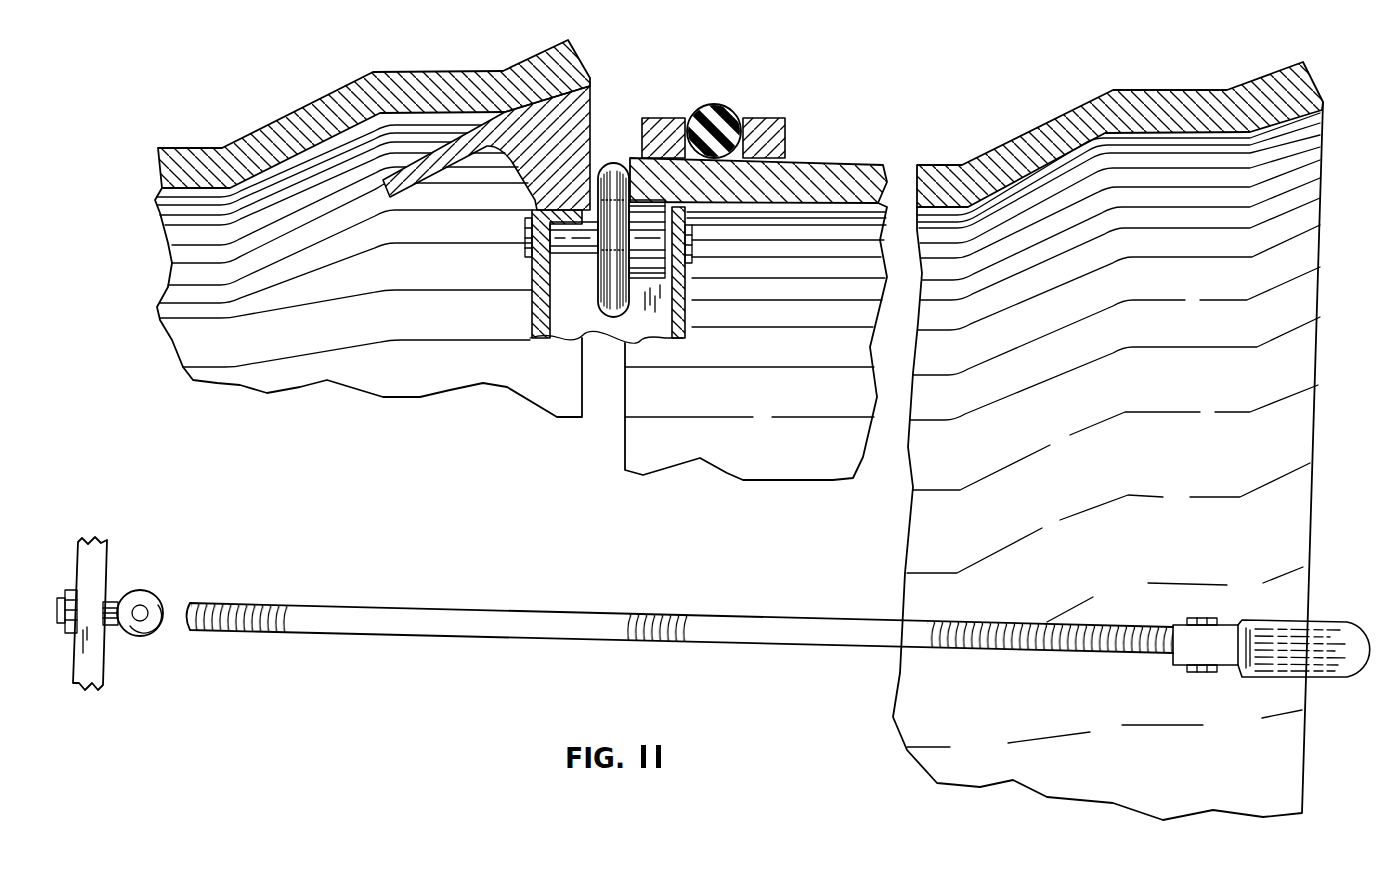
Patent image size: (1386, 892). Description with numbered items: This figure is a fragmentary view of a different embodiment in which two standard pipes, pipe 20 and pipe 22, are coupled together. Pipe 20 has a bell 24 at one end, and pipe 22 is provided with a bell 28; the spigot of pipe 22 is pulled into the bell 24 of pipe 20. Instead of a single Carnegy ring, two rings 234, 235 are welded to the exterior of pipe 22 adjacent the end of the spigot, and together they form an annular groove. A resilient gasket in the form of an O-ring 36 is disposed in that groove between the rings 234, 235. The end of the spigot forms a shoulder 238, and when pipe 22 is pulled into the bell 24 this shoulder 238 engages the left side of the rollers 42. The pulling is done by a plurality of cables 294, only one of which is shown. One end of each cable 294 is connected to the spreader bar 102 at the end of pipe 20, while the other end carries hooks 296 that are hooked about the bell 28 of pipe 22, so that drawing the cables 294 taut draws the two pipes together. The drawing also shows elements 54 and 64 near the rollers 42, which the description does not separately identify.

The pipe 20 is at (199, 146).
The pipe 22 is at (934, 156).
The bell 24 is at (409, 71).
The bell 28 is at (1147, 90).
The gasket 36 is at (718, 107).
The rollers 42 is at (607, 318).
The roller bracket 54 is at (532, 305).
The retaining clip 64 is at (407, 188).
The spreader bar 102 is at (98, 582).
The ring 234 is at (770, 118).
The ring 235 is at (655, 117).
The shoulder 238 is at (630, 158).
The cables 294 is at (527, 612).
The hooks 296 is at (1320, 623).